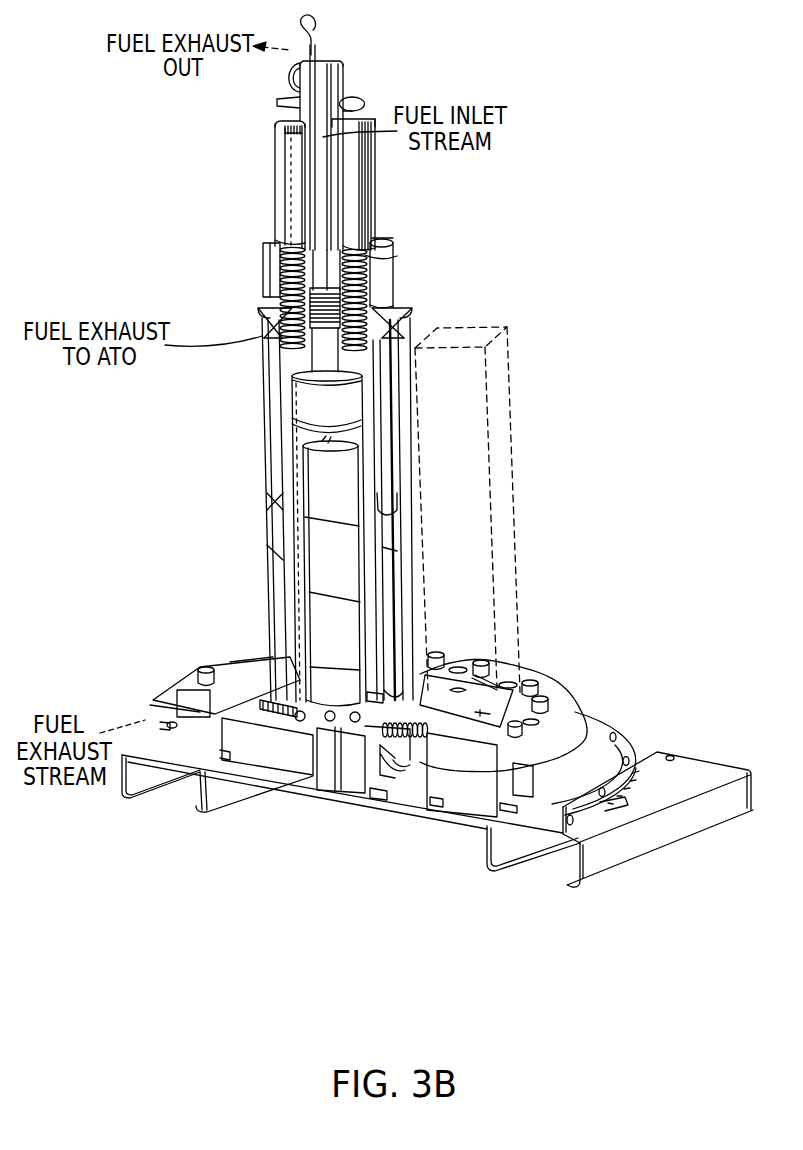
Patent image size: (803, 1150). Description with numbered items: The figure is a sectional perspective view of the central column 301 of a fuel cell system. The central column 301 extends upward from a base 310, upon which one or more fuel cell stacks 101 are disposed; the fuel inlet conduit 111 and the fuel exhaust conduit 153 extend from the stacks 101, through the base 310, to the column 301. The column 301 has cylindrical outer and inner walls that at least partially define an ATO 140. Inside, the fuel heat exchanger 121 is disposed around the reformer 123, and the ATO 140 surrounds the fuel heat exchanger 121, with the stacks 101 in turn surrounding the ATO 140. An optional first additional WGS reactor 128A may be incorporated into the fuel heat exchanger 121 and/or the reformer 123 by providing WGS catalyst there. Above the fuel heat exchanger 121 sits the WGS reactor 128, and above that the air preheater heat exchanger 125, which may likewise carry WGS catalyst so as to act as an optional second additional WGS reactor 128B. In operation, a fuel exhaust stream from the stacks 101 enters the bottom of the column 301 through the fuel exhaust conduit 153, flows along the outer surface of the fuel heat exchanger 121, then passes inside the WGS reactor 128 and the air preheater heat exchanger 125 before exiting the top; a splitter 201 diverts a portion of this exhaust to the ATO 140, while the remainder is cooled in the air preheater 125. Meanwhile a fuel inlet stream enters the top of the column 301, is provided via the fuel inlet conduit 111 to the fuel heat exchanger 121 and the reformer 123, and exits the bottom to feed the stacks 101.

The fuel cell stack 101 is at (513, 455).
The fuel inlet conduit 111 is at (553, 720).
The fuel heat exchanger 121 is at (229, 536).
The first additional WGS reactor 128A is at (272, 535).
The reformer 123 is at (330, 617).
The air preheater heat exchanger 125 is at (192, 185).
The second additional WGS reactor 128B is at (275, 188).
The WGS reactor 128 is at (395, 315).
The ATO 140 is at (265, 385).
The fuel exhaust conduit 153 is at (180, 683).
The splitter 201 is at (262, 312).
The central column 301 is at (678, 992).
The base 310 is at (583, 716).